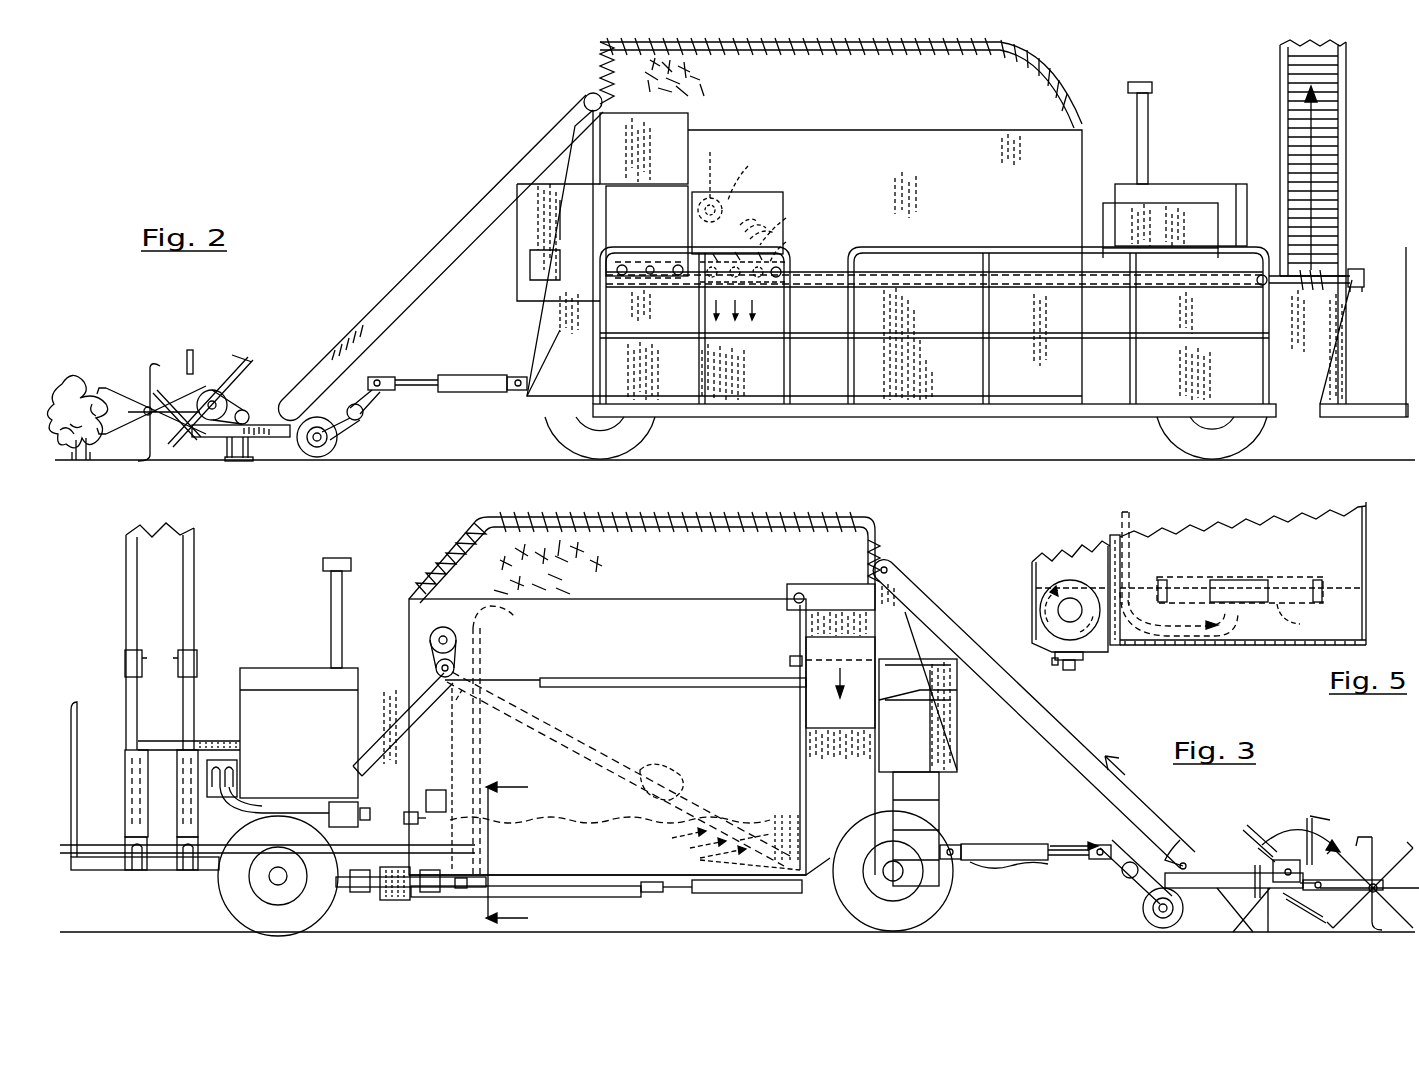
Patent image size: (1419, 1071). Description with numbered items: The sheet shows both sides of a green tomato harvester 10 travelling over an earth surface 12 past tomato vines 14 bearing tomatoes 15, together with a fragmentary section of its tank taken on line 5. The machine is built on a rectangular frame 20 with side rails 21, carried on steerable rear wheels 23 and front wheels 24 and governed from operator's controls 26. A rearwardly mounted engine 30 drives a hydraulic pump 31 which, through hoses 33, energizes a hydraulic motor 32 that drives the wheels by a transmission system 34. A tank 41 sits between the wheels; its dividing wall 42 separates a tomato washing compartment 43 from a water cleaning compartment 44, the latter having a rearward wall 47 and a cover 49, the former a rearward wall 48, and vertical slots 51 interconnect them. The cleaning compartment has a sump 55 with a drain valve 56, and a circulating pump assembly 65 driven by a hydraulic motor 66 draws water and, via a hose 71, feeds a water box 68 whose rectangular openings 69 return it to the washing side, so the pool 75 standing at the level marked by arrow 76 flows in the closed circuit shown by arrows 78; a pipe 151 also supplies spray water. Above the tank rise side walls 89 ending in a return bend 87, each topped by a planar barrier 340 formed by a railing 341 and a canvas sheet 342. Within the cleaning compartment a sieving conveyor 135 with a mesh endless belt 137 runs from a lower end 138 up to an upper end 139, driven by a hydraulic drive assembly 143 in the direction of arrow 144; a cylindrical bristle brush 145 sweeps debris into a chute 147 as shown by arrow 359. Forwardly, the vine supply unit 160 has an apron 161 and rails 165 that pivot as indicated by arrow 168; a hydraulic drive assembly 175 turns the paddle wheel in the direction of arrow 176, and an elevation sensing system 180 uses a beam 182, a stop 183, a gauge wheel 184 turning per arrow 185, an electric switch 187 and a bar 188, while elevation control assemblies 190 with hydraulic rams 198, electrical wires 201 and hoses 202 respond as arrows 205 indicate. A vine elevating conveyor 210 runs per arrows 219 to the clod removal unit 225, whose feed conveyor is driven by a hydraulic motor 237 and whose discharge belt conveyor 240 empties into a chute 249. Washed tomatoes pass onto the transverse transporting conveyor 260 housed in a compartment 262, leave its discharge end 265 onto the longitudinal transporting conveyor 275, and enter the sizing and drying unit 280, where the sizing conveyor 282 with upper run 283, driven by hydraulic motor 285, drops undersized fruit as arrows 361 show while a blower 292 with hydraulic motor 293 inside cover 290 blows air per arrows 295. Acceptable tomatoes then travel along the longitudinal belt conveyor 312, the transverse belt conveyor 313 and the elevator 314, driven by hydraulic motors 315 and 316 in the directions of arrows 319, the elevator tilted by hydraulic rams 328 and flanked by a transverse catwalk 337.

In FIG. 3, the section line 5 is at (515, 857).
In FIG. 2, the harvester 10 is at (366, 118).
In FIG. 3, the harvester 10 is at (430, 518).
In FIG. 2, the earth surface 12 is at (1337, 460).
In FIG. 3, the earth surface 12 is at (100, 932).
In FIG. 2, the tomato vines 14 is at (78, 382).
In FIG. 2, the tomatoes 15 is at (82, 461).
In FIG. 2, the frame 20 is at (586, 406).
In FIG. 2, the side rails 21 is at (955, 410).
In FIG. 2, the rear wheels 23 is at (1184, 428).
In FIG. 3, the rear wheels 23 is at (244, 904).
In FIG. 2, the front wheels 24 is at (638, 441).
In FIG. 3, the front wheels 24 is at (850, 906).
In FIG. 2, the operator's controls 26 is at (515, 240).
In FIG. 3, the operator's controls 26 is at (958, 712).
In FIG. 2, the engine 30 is at (1162, 184).
In FIG. 3, the engine 30 is at (270, 668).
In FIG. 3, the hydraulic pump 31 is at (224, 790).
In FIG. 3, the hydraulic motor 32 is at (342, 802).
In FIG. 3, the hoses 33 is at (276, 806).
In FIG. 3, the transmission system 34 is at (384, 898).
In FIG. 3, the tank 41 is at (804, 802).
In FIG. 5, the dividing wall 42 is at (1112, 538).
In FIG. 5, the tomato washing compartment 43 is at (1358, 574).
In FIG. 3, the water cleaning compartment 44 is at (620, 706).
In FIG. 5, the water cleaning compartment 44 is at (1036, 570).
In FIG. 5, the rearward wall 47 is at (1100, 577).
In FIG. 5, the rearward wall 48 is at (1347, 563).
In FIG. 3, the cover 49 is at (712, 678).
In FIG. 3, the vertical slots 51 is at (786, 814).
In FIG. 3, the sump 55 is at (470, 890).
In FIG. 5, the sump 55 is at (1092, 652).
In FIG. 5, the drain valve 56 is at (1068, 672).
In FIG. 3, the circulating pump assembly 65 is at (432, 796).
In FIG. 5, the circulating pump assembly 65 is at (1062, 578).
In FIG. 3, the hydraulic motor 66 is at (402, 850).
In FIG. 5, the water box 68 is at (1300, 624).
In FIG. 5, the rectangular openings 69 is at (1316, 582).
In FIG. 5, the hose 71 is at (1200, 642).
In FIG. 3, the pool 75 is at (606, 880).
In FIG. 5, the pool 75 is at (1350, 612).
In FIG. 3, the arrow 76 is at (600, 816).
In FIG. 3, the arrows 78 is at (672, 846).
In FIG. 3, the return bend 87 is at (512, 640).
In FIG. 2, the side walls 89 is at (973, 185).
In FIG. 3, the side walls 89 is at (762, 634).
In FIG. 3, the sieving conveyor 135 is at (548, 710).
In FIG. 3, the endless belt 137 is at (673, 775).
In FIG. 3, the lower end 138 is at (770, 880).
In FIG. 3, the upper end 139 is at (451, 779).
In FIG. 3, the hydraulic drive assembly 143 is at (456, 672).
In FIG. 3, the arrow 144 is at (602, 748).
In FIG. 3, the cylindrical bristle brush 145 is at (432, 636).
In FIG. 3, the chute 147 is at (400, 712).
In FIG. 5, the pipe 151 is at (1130, 524).
In FIG. 2, the vine supply unit 160 is at (372, 275).
In FIG. 3, the apron 161 is at (944, 822).
In FIG. 2, the rails 165 is at (504, 342).
In FIG. 2, the arrow 168 is at (237, 482).
In FIG. 2, the hydraulic drive assembly 175 is at (212, 390).
In FIG. 3, the arrow 176 is at (1326, 812).
In FIG. 3, the elevation sensing system 180 is at (1242, 820).
In FIG. 3, the beam 182 is at (1322, 900).
In FIG. 3, the stop 183 is at (1134, 862).
In FIG. 2, the gauge wheel 184 is at (150, 367).
In FIG. 3, the gauge wheel 184 is at (1374, 826).
In FIG. 3, the arrow 185 is at (1400, 858).
In FIG. 3, the electric switch 187 is at (1296, 858).
In FIG. 3, the bar 188 is at (1334, 828).
In FIG. 2, the elevation control assemblies 190 is at (407, 358).
In FIG. 3, the elevation control assemblies 190 is at (1060, 818).
In FIG. 2, the hydraulic ram 198 is at (478, 375).
In FIG. 3, the hydraulic ram 198 is at (1002, 844).
In FIG. 3, the electrical wires 201 is at (1258, 852).
In FIG. 3, the hoses 202 is at (1008, 866).
In FIG. 2, the arrows 205 is at (317, 437).
In FIG. 3, the arrows 205 is at (1252, 888).
In FIG. 2, the vine elevating conveyor 210 is at (480, 204).
In FIG. 3, the vine elevating conveyor 210 is at (938, 596).
In FIG. 3, the arrows 219 is at (1128, 778).
In FIG. 2, the clod removal unit 225 is at (593, 102).
In FIG. 3, the clod removal unit 225 is at (882, 548).
In FIG. 3, the hydraulic motor 237 is at (792, 596).
In FIG. 3, the discharge belt conveyor 240 is at (830, 606).
In FIG. 3, the chute 249 is at (812, 706).
In FIG. 2, the transverse tomato transporting belt conveyor 260 is at (636, 266).
In FIG. 2, the compartment 262 is at (663, 209).
In FIG. 2, the discharge end 265 is at (610, 258).
In FIG. 2, the longitudinal transporting belt conveyor 275 is at (652, 290).
In FIG. 2, the sizing and drying unit 280 is at (772, 186).
In FIG. 2, the sizing conveyor 282 is at (786, 242).
In FIG. 2, the upper run 283 is at (786, 216).
In FIG. 2, the hydraulic motor 285 is at (780, 278).
In FIG. 2, the cover 290 is at (705, 198).
In FIG. 2, the blower 292 is at (756, 171).
In FIG. 2, the hydraulic motor 293 is at (714, 163).
In FIG. 2, the arrows 295 is at (756, 218).
In FIG. 2, the longitudinal belt conveyor 312 is at (1012, 270).
In FIG. 2, the transverse belt conveyor 313 is at (1332, 270).
In FIG. 2, the elevator 314 is at (1348, 160).
In FIG. 3, the elevator 314 is at (122, 660).
In FIG. 2, the hydraulic motor 315 is at (1262, 287).
In FIG. 2, the hydraulic motor 316 is at (1364, 290).
In FIG. 2, the arrows 319 is at (1302, 104).
In FIG. 3, the hydraulic rams 328 is at (186, 760).
In FIG. 2, the transverse catwalk 337 is at (1406, 342).
In FIG. 3, the transverse catwalk 337 is at (96, 690).
In FIG. 2, the planar barrier 340 is at (588, 50).
In FIG. 3, the planar barrier 340 is at (594, 510).
In FIG. 2, the railing 341 is at (1006, 52).
In FIG. 3, the railing 341 is at (712, 514).
In FIG. 2, the canvas sheet 342 is at (864, 86).
In FIG. 3, the canvas sheet 342 is at (681, 575).
In FIG. 3, the arrow 359 is at (424, 680).
In FIG. 2, the arrows 361 is at (758, 300).